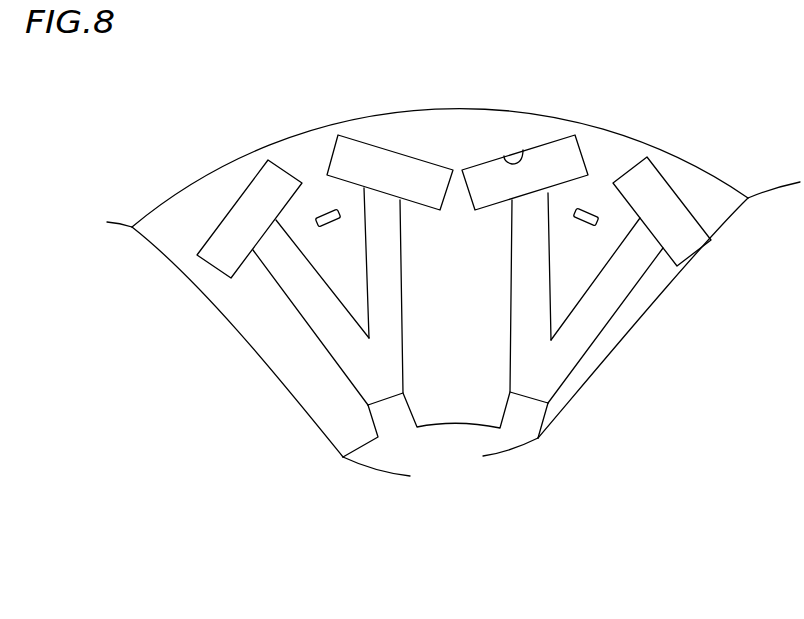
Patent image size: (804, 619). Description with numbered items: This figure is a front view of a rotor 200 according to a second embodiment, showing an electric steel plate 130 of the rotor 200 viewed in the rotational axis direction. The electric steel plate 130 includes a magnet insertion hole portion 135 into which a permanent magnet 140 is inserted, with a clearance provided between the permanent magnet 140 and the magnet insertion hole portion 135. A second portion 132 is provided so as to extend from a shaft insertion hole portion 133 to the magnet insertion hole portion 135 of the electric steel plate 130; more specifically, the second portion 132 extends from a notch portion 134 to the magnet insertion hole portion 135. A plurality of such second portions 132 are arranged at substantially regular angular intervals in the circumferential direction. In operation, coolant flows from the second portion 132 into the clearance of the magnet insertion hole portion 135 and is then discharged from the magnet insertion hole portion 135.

The rotor 200 is at (160, 133).
The electric steel plate 130 is at (298, 125).
The permanent magnet 140 is at (570, 160).
The magnet insertion hole portion 135 is at (523, 150).
The second portion 132 is at (545, 358).
The shaft insertion hole portion 133 is at (457, 423).
The notch portion 134 is at (375, 420).